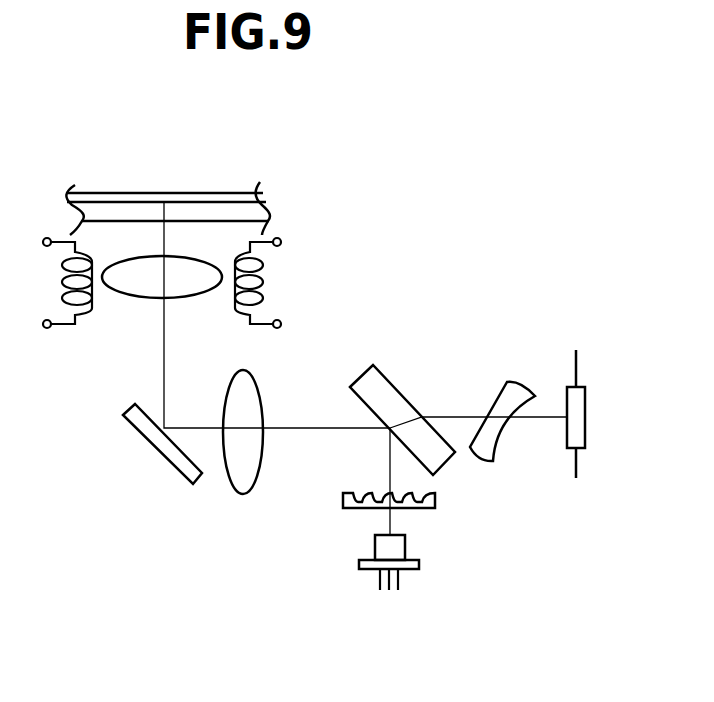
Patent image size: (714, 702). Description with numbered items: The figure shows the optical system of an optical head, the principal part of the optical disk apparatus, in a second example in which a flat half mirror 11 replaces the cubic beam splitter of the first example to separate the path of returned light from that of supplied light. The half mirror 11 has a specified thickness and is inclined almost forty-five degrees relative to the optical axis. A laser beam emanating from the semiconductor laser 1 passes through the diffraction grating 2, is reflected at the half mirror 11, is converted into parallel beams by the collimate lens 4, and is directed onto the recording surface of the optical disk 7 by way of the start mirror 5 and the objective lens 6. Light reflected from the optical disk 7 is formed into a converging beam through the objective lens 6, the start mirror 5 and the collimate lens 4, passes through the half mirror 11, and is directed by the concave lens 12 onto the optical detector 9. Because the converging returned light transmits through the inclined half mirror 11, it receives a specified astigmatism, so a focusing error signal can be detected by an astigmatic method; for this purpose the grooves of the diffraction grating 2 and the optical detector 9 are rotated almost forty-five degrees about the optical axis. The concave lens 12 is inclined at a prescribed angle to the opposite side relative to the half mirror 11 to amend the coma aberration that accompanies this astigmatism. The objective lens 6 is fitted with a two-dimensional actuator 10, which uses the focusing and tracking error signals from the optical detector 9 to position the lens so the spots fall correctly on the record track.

The semiconductor laser 1 is at (375, 542).
The diffraction grating 2 is at (435, 502).
The collimate lens 4 is at (240, 482).
The start mirror 5 is at (167, 462).
The objective lens 6 is at (140, 297).
The optical disk 7 is at (228, 193).
The optical detector 9 is at (582, 387).
The two-dimensional actuator 10 is at (263, 277).
The flat half mirror 11 is at (383, 372).
The concave lens 12 is at (510, 380).